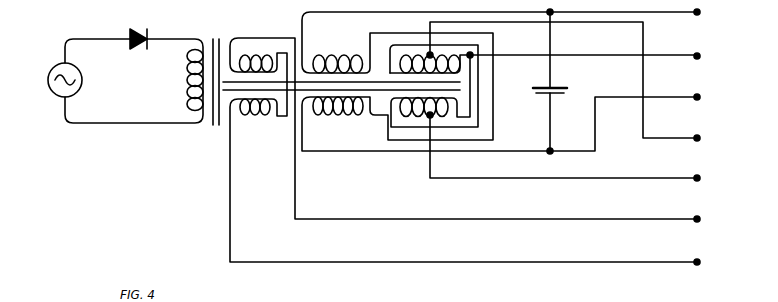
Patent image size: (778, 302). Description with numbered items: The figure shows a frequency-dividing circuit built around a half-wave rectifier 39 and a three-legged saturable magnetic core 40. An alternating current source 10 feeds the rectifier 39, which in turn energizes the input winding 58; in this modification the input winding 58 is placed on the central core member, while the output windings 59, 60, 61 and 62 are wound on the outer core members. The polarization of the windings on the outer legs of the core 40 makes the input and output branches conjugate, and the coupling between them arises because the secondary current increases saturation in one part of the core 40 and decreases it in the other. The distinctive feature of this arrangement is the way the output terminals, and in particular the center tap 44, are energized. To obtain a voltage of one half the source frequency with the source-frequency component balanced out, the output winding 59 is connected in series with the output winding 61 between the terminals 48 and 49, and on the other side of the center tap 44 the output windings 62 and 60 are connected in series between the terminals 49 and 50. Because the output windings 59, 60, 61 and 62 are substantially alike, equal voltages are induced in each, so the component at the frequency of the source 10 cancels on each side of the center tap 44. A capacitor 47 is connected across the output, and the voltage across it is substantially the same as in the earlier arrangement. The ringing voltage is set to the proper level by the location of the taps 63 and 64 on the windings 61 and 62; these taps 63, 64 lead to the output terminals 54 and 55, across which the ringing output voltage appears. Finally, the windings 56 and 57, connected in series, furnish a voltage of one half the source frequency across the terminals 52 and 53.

The source 10 is at (79, 98).
The half-wave rectifier 39 is at (149, 33).
The three-legged saturable magnetic core 40 is at (214, 37).
The input winding 58 is at (187, 105).
The winding 57 is at (265, 58).
The winding 56 is at (268, 118).
The output winding 59 is at (338, 57).
The output winding 60 is at (349, 116).
The output winding 61 is at (388, 116).
The tap 63 is at (427, 53).
The output winding 62 is at (449, 66).
The tap 64 is at (433, 117).
The center tap 44 is at (473, 56).
The capacitor 47 is at (565, 92).
The terminal 48 is at (701, 11).
The terminal 49 is at (701, 56).
The terminal 50 is at (701, 97).
The terminal 52 is at (705, 217).
The terminal 53 is at (704, 266).
The output terminal 54 is at (699, 140).
The output terminal 55 is at (701, 182).